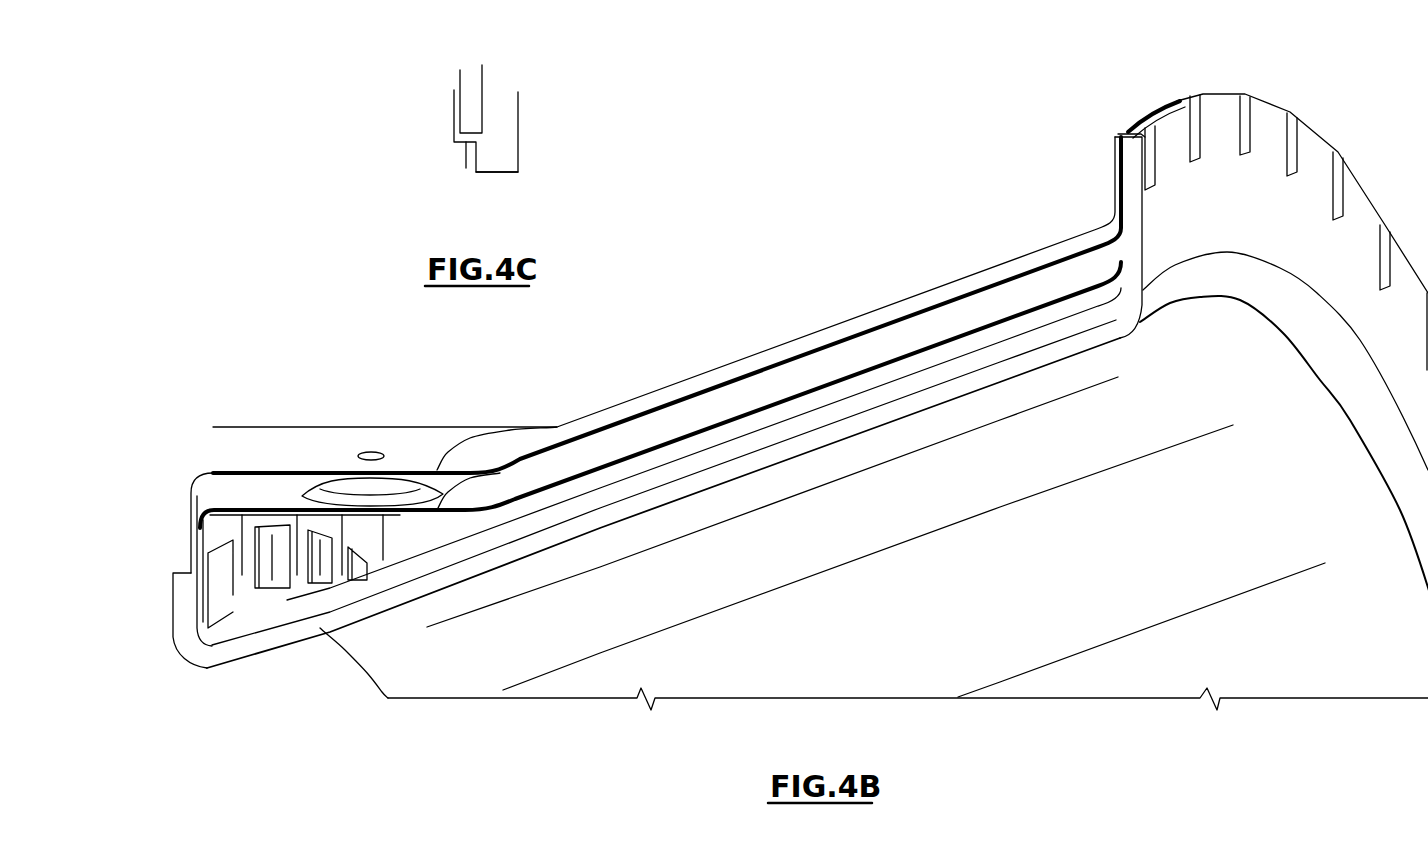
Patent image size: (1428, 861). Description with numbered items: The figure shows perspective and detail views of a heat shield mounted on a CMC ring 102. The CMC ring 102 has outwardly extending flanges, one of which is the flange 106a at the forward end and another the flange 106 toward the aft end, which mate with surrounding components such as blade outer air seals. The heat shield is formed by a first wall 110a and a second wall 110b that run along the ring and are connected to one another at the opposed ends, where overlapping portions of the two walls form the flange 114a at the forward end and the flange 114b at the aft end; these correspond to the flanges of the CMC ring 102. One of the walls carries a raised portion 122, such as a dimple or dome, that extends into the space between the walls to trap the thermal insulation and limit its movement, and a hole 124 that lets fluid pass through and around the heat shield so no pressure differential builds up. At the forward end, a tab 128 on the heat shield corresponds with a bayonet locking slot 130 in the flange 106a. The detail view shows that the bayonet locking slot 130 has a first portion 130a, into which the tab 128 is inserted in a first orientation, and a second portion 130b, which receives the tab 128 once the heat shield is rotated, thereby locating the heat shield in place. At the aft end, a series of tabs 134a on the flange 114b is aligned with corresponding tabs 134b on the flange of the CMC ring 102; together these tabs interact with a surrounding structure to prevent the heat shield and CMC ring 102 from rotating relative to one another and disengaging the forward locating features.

In FIG. 4B, the CMC ring 102 is at (377, 597).
In FIG. 4B, the flange of the CMC ring 106 is at (1238, 223).
In FIG. 4B, the flange 106a is at (180, 597).
In FIG. 4B, the first wall 110a is at (727, 382).
In FIG. 4B, the second wall 110b is at (873, 352).
In FIG. 4B, the flange 114a is at (181, 502).
In FIG. 4B, the flange 114b is at (1098, 183).
In FIG. 4B, the raised portion 122 is at (393, 486).
In FIG. 4B, the hole 124 is at (372, 450).
In FIG. 4B, the tab 128 is at (200, 577).
In FIG. 4C, the tab 128 is at (472, 100).
In FIG. 4B, the bayonet locking slot 130 is at (241, 583).
In FIG. 4C, the bayonet locking slot 130 is at (455, 195).
In FIG. 4C, the first portion 130a is at (466, 168).
In FIG. 4C, the second portion 130b is at (499, 173).
In FIG. 4B, the tab 134a is at (1144, 98).
In FIG. 4B, the tab 134b is at (1222, 130).